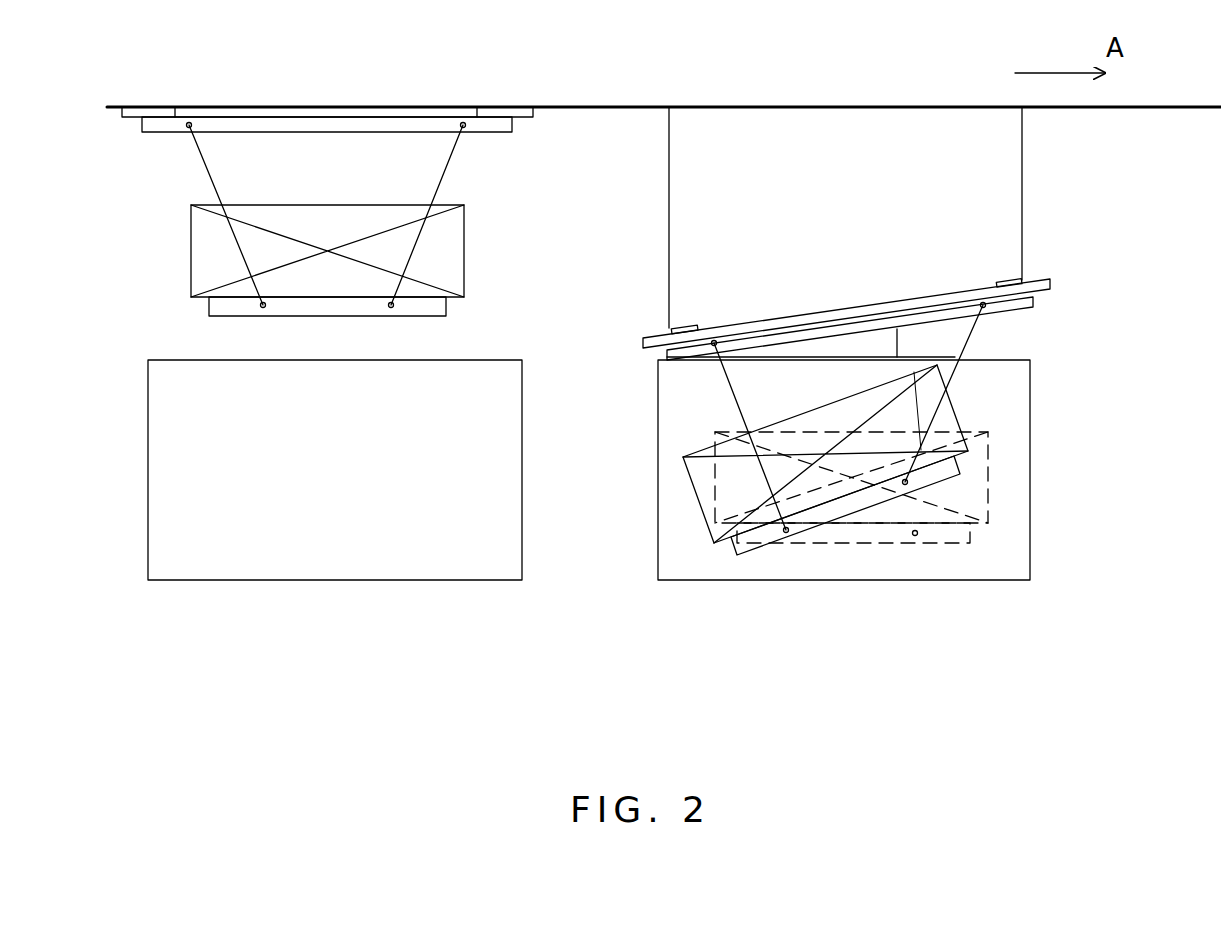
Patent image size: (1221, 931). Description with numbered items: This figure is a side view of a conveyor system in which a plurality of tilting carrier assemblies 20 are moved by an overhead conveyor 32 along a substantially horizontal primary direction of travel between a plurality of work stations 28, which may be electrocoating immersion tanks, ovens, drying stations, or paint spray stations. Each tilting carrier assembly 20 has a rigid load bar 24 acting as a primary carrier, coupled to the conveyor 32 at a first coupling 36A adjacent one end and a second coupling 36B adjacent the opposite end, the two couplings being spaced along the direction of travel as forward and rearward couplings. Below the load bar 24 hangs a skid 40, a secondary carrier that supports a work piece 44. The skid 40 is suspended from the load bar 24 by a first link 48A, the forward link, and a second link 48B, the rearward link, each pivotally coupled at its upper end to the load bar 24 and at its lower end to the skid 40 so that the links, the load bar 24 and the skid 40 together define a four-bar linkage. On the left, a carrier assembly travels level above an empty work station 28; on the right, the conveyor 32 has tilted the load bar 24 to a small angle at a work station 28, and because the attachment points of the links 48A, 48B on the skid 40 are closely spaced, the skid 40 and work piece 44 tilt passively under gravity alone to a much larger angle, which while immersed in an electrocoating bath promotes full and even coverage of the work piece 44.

The tilting carrier assembly 20 is at (124, 190).
The load bar 24 is at (333, 120).
The work station 28 is at (193, 582).
The conveyor 32 is at (603, 105).
The first coupling 36A is at (495, 112).
The second coupling 36B is at (143, 112).
The skid 40 is at (433, 307).
The work piece 44 is at (448, 253).
The first link 48A is at (440, 182).
The second link 48B is at (220, 193).